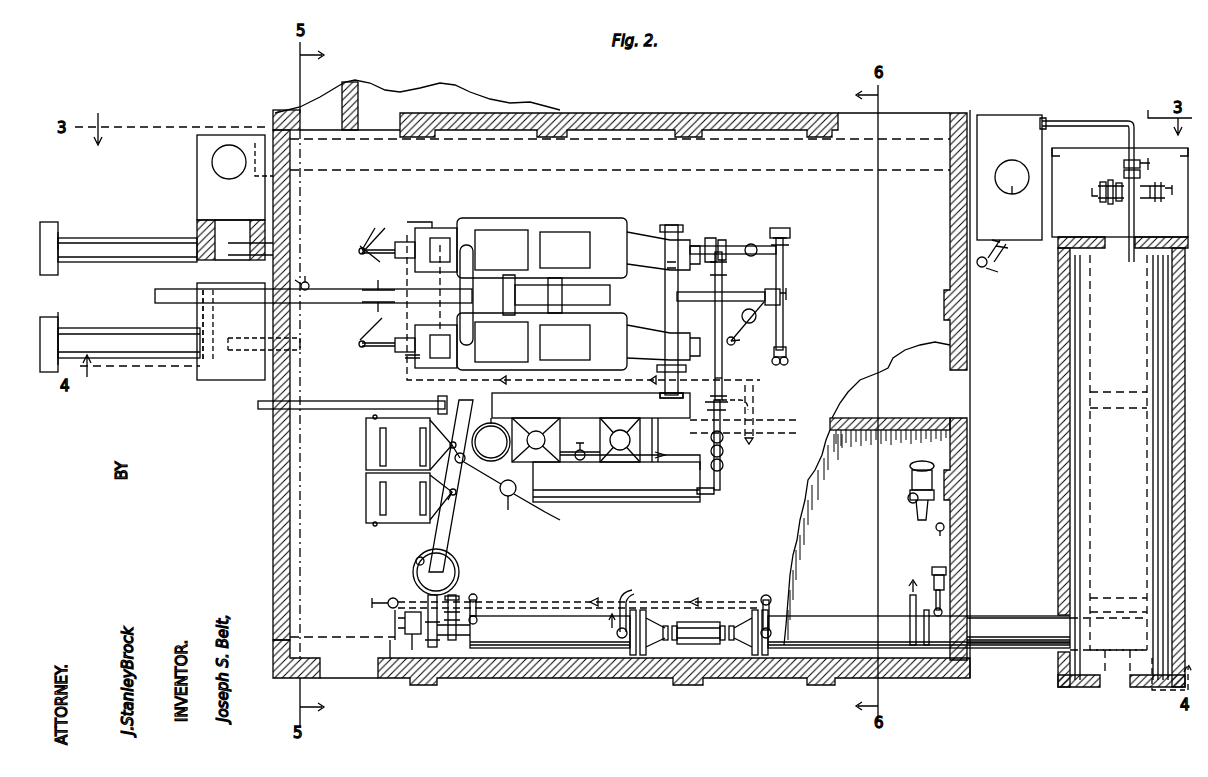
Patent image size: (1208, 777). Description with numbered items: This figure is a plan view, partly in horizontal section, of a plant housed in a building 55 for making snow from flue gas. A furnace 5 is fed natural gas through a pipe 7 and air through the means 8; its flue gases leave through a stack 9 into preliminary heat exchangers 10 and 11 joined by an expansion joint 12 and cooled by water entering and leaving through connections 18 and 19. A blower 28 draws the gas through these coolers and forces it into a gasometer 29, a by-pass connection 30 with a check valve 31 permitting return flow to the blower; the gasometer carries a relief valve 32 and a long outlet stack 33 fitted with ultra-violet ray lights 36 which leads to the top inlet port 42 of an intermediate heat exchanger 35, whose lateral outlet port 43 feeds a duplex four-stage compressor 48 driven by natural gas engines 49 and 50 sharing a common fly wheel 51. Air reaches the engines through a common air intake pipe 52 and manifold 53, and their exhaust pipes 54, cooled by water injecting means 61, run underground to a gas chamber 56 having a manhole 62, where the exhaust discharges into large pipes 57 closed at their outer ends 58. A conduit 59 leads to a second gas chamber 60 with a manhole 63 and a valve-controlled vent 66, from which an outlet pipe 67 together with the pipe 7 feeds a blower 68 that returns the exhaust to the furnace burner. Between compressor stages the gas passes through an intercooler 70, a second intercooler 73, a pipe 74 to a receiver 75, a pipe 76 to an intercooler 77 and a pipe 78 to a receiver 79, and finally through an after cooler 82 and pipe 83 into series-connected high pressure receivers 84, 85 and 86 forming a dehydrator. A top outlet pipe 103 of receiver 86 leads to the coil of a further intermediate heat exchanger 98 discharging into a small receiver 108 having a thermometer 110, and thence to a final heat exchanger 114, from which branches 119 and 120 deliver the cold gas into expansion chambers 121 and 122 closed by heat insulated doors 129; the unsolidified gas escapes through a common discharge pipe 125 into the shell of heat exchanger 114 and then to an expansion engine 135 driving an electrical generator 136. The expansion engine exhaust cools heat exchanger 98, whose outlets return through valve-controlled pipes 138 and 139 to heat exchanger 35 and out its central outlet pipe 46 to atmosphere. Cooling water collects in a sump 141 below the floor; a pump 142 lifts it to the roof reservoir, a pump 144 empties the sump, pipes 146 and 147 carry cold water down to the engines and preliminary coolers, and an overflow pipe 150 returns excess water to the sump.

The furnace 5 is at (1123, 462).
The pipe 7 is at (1152, 200).
The air supply means 8 is at (1120, 192).
The stack 9 is at (995, 628).
The preliminary heat exchanger 10 is at (826, 616).
The preliminary heat exchanger 11 is at (562, 625).
The expansion joint 12 is at (695, 626).
The cooling water inlet connection 18 is at (478, 600).
The cooling water outlet connection 19 is at (628, 598).
The blower or gas booster 28 is at (425, 640).
The receiver or gasometer 29 is at (452, 560).
The by-pass connection 30 is at (470, 630).
The check valve 31 is at (456, 598).
The relief valve 32 is at (413, 572).
The outlet stack 33 is at (450, 535).
The intermediate heat exchanger 35 is at (591, 405).
The ultra-violet ray lights 36 is at (463, 464).
The top inlet port 42 is at (438, 402).
The lateral outlet port 43 is at (672, 393).
The central outlet pipe 46 is at (338, 412).
The compressor 48 is at (582, 228).
The internal combustion natural gas engine 49 is at (405, 357).
The internal combustion natural gas engine 50 is at (440, 228).
The fly wheel 51 is at (612, 296).
The air intake pipe 52 is at (355, 304).
The manifold 53 is at (471, 310).
The exhaust pipe 54 is at (240, 218).
The building 55 is at (700, 112).
The gas chamber 56 is at (205, 382).
The pipes 57 is at (122, 330).
The closed outer ends 58 is at (52, 320).
The conduit 59 is at (905, 138).
The second gas chamber 60 is at (1015, 140).
The water injecting means 61 is at (395, 252).
The manhole 62 is at (215, 164).
The manhole 63 is at (1012, 190).
The valve-controlled vent 66 is at (1005, 252).
The outlet pipe 67 is at (1076, 128).
The blower 68 is at (1110, 198).
The intercooler 70 is at (690, 270).
The second intercooler 73 is at (732, 290).
The pipe 74 is at (782, 300).
The receiver 75 is at (745, 313).
The pipe 76 is at (788, 340).
The intercooler 77 is at (786, 318).
The pipe 78 is at (790, 258).
The receiver 79 is at (751, 244).
The after cooler 82 is at (724, 376).
The pipe 83 is at (750, 408).
The receiver 84 is at (724, 440).
The receiver 85 is at (724, 453).
The receiver 86 is at (724, 470).
The intermediate heat exchanger 98 is at (656, 502).
The top outlet pipe 103 is at (714, 494).
The small receiver 108 is at (508, 497).
The thermometer 110 is at (530, 500).
The final heat exchanger 114 is at (497, 428).
The branch pipe 119 is at (405, 468).
The branch pipe 120 is at (424, 512).
The expansion chamber 121 is at (400, 444).
The expansion chamber 122 is at (402, 498).
The common discharge pipe 125 is at (491, 442).
The heat insulated door 129 is at (367, 455).
The expansion engine 135 is at (538, 430).
The electrical generator 136 is at (625, 433).
The valve-controlled pipe 138 is at (690, 460).
The valve-controlled pipe 139 is at (580, 449).
The sump 141 is at (905, 418).
The motor-operated pump 142 is at (915, 505).
The motor-operated pump 144 is at (946, 580).
The outlet pipe 146 is at (306, 282).
The pipe 147 is at (386, 600).
The overflow pipe 150 is at (938, 532).